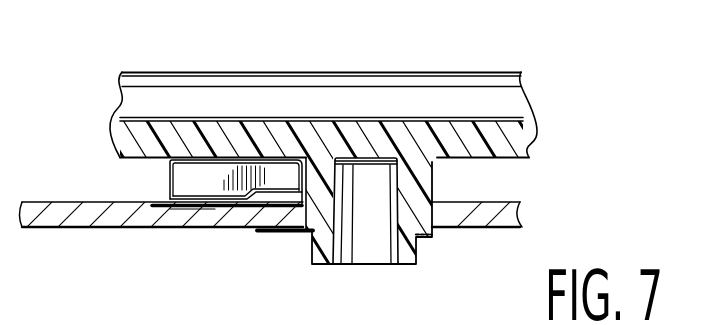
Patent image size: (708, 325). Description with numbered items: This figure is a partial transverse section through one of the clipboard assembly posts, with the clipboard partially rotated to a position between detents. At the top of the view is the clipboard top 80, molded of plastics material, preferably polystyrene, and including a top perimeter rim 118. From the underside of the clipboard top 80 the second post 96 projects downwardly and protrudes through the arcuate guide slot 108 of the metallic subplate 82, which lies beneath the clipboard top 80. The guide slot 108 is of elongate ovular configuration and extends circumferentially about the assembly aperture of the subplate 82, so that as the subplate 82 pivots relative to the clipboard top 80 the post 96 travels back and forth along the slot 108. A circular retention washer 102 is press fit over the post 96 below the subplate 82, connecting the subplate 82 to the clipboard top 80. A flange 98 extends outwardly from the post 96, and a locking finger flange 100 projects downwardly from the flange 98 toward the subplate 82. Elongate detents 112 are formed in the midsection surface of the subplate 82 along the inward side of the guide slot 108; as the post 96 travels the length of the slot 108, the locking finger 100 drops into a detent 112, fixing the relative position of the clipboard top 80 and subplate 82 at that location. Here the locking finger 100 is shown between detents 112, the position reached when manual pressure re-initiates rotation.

The clipboard top 80 is at (137, 128).
The subplate 82 is at (84, 213).
The second post 96 is at (406, 203).
The flange 98 is at (203, 178).
The locking finger flange 100 is at (172, 201).
The retention washer 102 is at (428, 235).
The arcuate guide slot 108 is at (312, 233).
The detent 112 is at (214, 203).
The top perimeter rim 118 is at (303, 72).